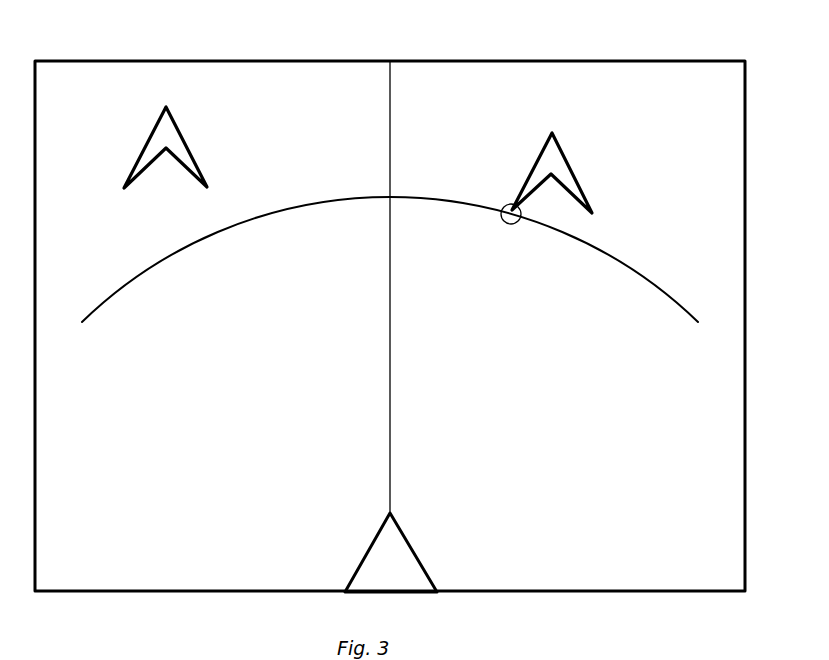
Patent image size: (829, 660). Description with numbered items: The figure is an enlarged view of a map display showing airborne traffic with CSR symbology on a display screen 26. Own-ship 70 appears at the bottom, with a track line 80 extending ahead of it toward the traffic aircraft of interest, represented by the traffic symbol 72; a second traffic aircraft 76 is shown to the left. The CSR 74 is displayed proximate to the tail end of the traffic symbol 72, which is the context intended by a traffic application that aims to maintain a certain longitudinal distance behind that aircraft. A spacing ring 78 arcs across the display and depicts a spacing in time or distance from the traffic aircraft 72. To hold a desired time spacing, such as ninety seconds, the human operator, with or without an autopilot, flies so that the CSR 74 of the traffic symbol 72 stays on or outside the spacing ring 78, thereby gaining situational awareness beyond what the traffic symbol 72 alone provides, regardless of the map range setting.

The display screen 26 is at (710, 61).
The own-ship 70 is at (422, 557).
The traffic symbol 72 is at (563, 153).
The CSR 74 is at (505, 208).
The traffic aircraft 76 is at (179, 128).
The spacing ring 78 is at (650, 277).
The track line 80 is at (390, 362).